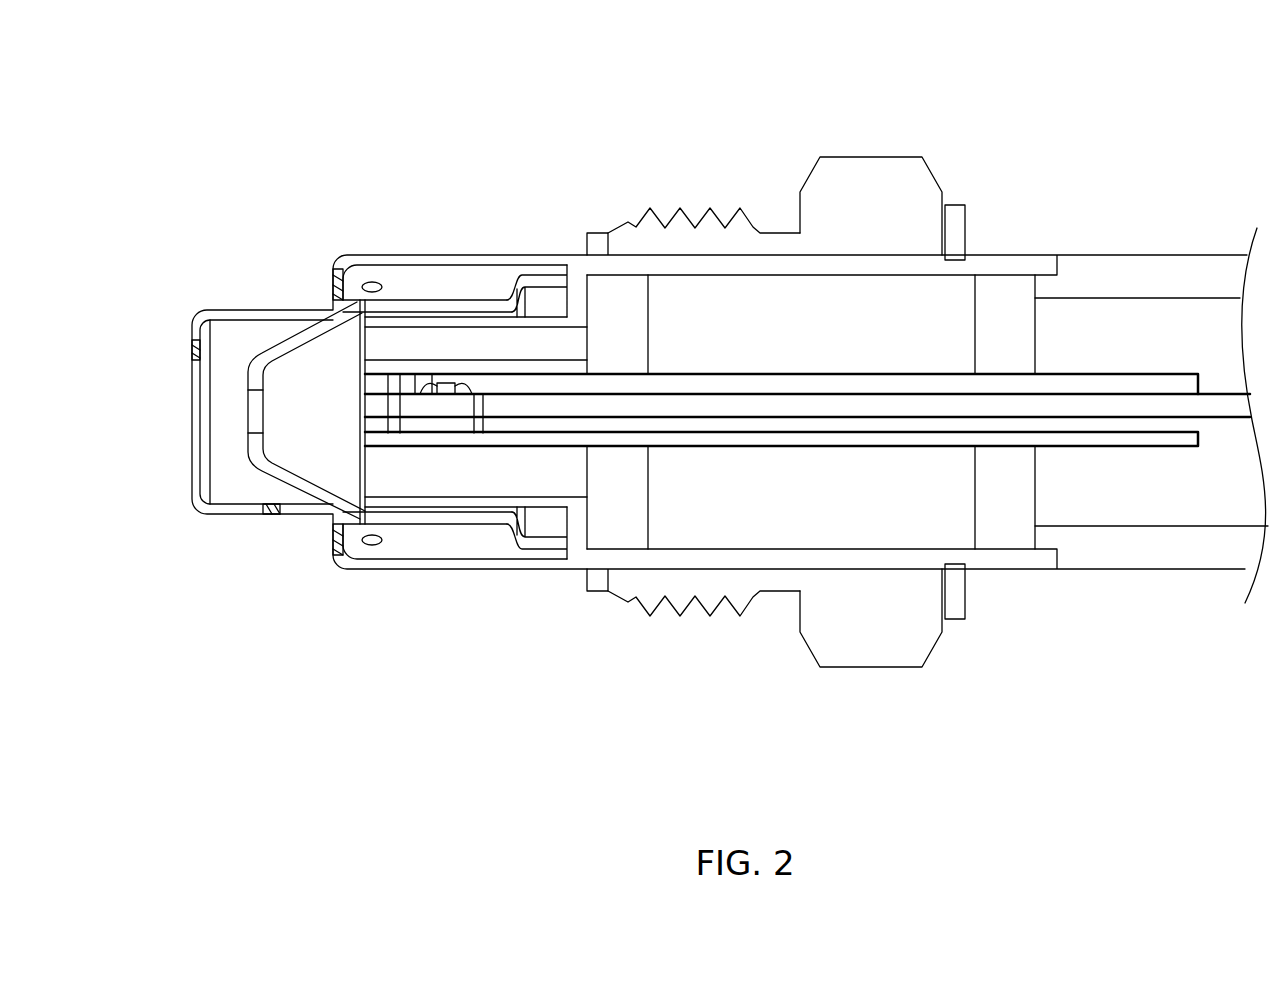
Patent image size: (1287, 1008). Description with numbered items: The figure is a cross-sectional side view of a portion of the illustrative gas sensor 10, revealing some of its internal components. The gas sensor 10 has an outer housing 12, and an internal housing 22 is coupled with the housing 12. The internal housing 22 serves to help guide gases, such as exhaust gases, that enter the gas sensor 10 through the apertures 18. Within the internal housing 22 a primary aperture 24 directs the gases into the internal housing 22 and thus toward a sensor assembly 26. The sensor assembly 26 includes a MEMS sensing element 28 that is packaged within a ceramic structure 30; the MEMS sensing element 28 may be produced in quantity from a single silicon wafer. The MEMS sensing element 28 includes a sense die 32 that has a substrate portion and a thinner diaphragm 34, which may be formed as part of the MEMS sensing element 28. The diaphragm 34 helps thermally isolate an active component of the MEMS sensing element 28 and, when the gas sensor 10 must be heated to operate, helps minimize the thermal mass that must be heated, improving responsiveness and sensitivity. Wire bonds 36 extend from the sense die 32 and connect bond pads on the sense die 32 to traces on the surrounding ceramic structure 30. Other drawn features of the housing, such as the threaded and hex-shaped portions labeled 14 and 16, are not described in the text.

The gas sensor 10 is at (1040, 90).
The housing 12 is at (1058, 212).
The threads 14 is at (683, 208).
The hex nut portion 16 is at (876, 157).
The apertures 18 is at (338, 290).
The internal housing 22 is at (290, 340).
The primary aperture 24 is at (255, 413).
The sensor assembly 26 is at (545, 290).
The MEMS sensing element 28 is at (432, 345).
The ceramic structure 30 is at (565, 470).
The sense die 32 is at (452, 398).
The diaphragm 34 is at (487, 398).
The wire bonds 36 is at (432, 394).